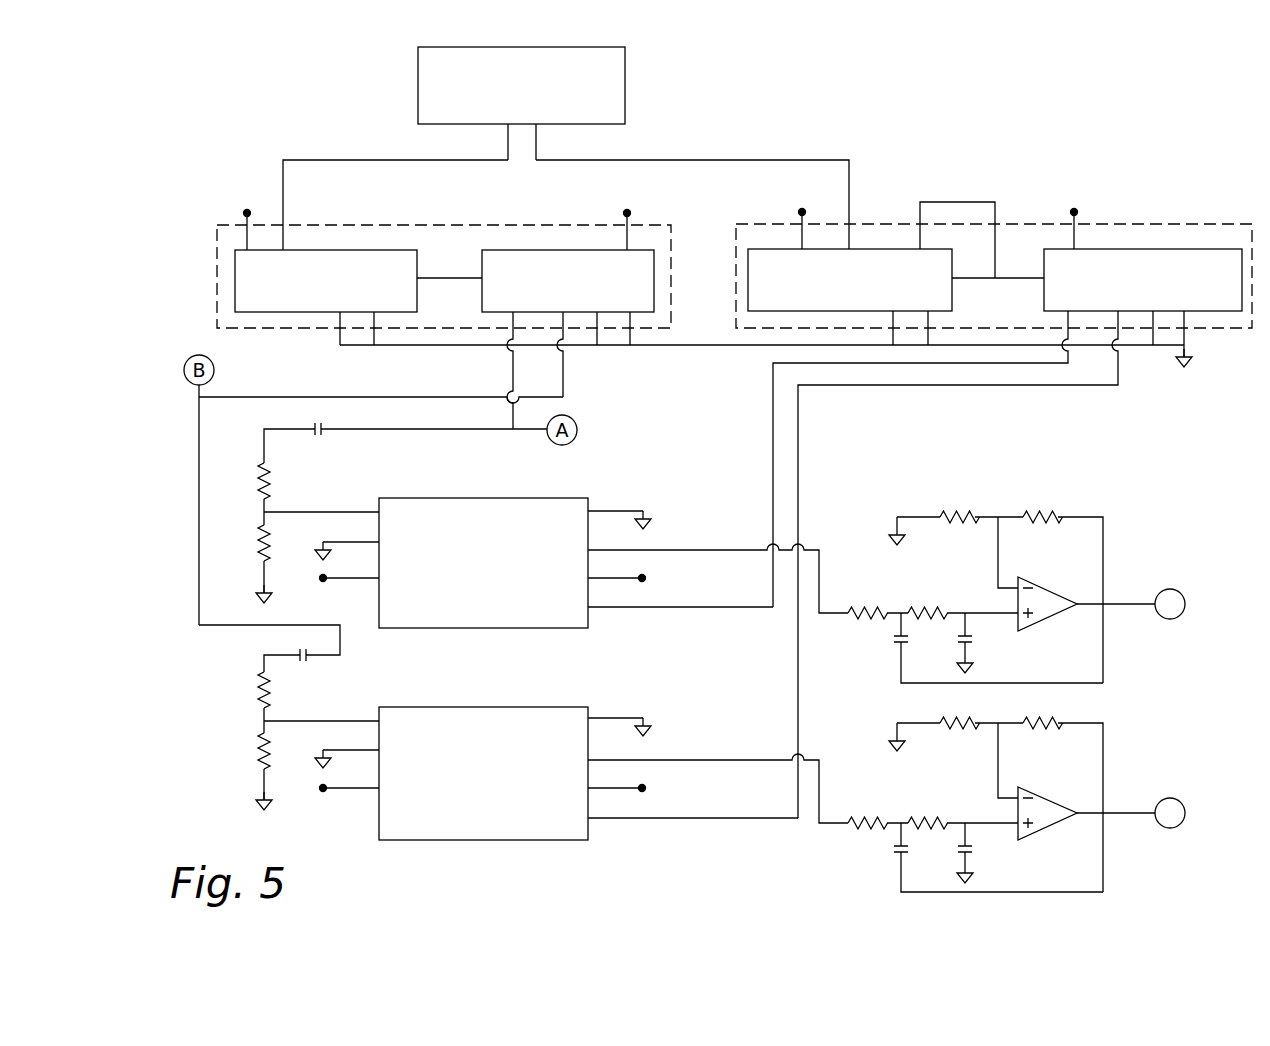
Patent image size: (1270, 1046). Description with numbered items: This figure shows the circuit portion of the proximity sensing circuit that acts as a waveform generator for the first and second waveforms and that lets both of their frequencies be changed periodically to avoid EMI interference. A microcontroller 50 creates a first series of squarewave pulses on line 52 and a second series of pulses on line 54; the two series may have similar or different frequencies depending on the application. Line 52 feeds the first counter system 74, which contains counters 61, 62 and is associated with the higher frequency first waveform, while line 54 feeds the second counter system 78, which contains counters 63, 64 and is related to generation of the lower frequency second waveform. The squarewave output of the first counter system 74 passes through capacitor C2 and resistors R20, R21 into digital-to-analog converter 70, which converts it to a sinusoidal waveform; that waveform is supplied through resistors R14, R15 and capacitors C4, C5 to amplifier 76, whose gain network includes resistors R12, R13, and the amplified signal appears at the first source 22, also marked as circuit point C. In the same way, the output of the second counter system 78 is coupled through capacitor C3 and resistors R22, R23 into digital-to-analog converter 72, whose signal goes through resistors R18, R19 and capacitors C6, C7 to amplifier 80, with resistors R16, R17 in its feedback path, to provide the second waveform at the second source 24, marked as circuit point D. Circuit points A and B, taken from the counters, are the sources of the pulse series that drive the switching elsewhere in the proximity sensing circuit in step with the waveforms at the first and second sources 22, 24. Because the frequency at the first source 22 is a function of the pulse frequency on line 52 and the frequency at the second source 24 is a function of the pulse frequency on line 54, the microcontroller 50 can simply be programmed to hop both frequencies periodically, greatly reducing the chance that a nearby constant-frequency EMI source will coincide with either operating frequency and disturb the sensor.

The microcontroller 50 is at (625, 85).
The line 52 is at (372, 160).
The line 54 is at (597, 160).
The first counter system 74 is at (217, 250).
The second counter system 78 is at (1165, 224).
The counter 61 is at (304, 302).
The counter 62 is at (605, 281).
The counter 63 is at (869, 304).
The counter 64 is at (1144, 287).
The digital-to-analog converter 70 is at (473, 617).
The digital-to-analog converter 72 is at (473, 830).
The amplifier 76 is at (1046, 622).
The amplifier 80 is at (1046, 830).
The first source 22 is at (1185, 604).
The second source 24 is at (1185, 813).
The resistor R12 is at (955, 510).
The resistor R13 is at (1030, 511).
The resistor R14 is at (868, 607).
The resistor R15 is at (926, 607).
The resistor R16 is at (962, 730).
The resistor R17 is at (1046, 730).
The resistor R18 is at (858, 831).
The resistor R19 is at (926, 817).
The resistor R20 is at (270, 487).
The resistor R21 is at (258, 548).
The resistor R22 is at (258, 696).
The resistor R23 is at (258, 758).
The capacitor C2 is at (320, 436).
The capacitor C3 is at (305, 662).
The capacitor C4 is at (894, 640).
The capacitor C5 is at (973, 646).
The capacitor C6 is at (894, 850).
The capacitor C7 is at (973, 856).